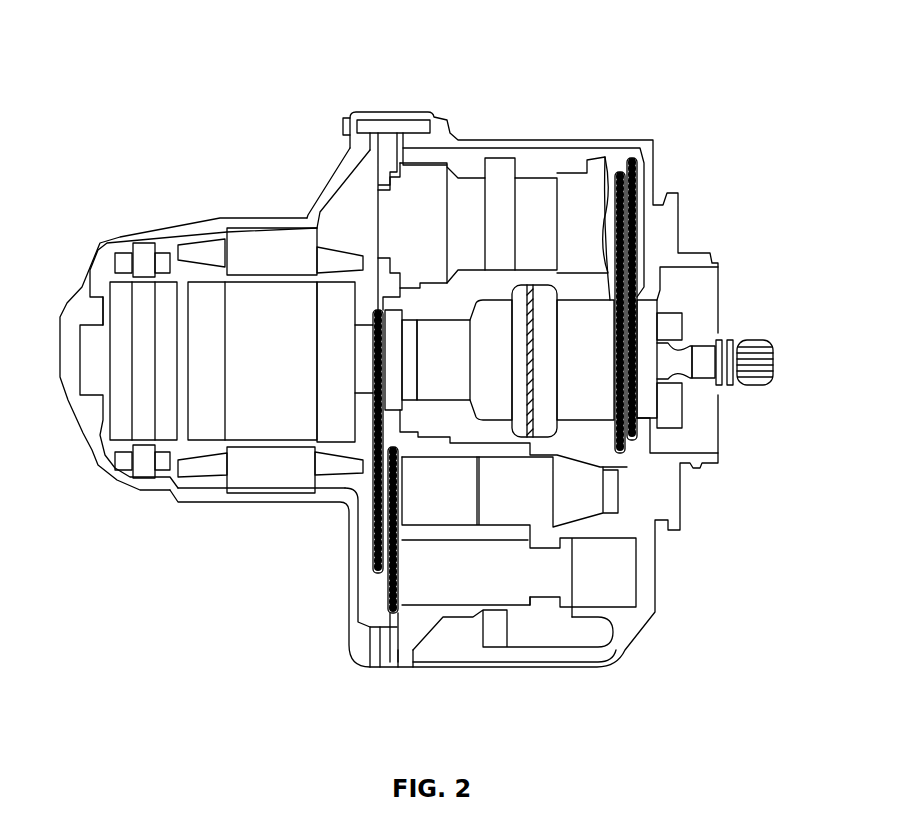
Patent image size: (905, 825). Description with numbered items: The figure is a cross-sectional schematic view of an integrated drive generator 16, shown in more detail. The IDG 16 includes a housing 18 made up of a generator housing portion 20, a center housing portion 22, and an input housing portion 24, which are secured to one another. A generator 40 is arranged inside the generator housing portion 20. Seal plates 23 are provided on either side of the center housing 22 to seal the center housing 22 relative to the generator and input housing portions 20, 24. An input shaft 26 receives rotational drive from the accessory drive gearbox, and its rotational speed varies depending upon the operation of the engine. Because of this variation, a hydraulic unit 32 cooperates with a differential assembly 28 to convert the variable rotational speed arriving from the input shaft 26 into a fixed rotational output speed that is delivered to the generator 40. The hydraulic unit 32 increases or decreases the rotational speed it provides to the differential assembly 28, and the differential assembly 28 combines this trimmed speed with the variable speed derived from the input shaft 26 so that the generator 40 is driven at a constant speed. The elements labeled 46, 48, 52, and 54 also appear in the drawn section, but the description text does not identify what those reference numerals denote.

The integrated drive generator 16 is at (630, 30).
The housing 18 is at (335, 160).
The generator housing portion 20 is at (136, 228).
The center housing portion 22 is at (390, 105).
The seal plates 23 is at (401, 676).
The input housing portion 24 is at (665, 140).
The input shaft 26 is at (748, 392).
The differential assembly 28 is at (606, 297).
The hydraulic unit 32 is at (552, 175).
The generator 40 is at (218, 480).
The first chain 46 is at (385, 530).
The sprocket assembly 48 is at (628, 513).
The lubricant passage 52 is at (535, 616).
The second chain 54 is at (395, 598).